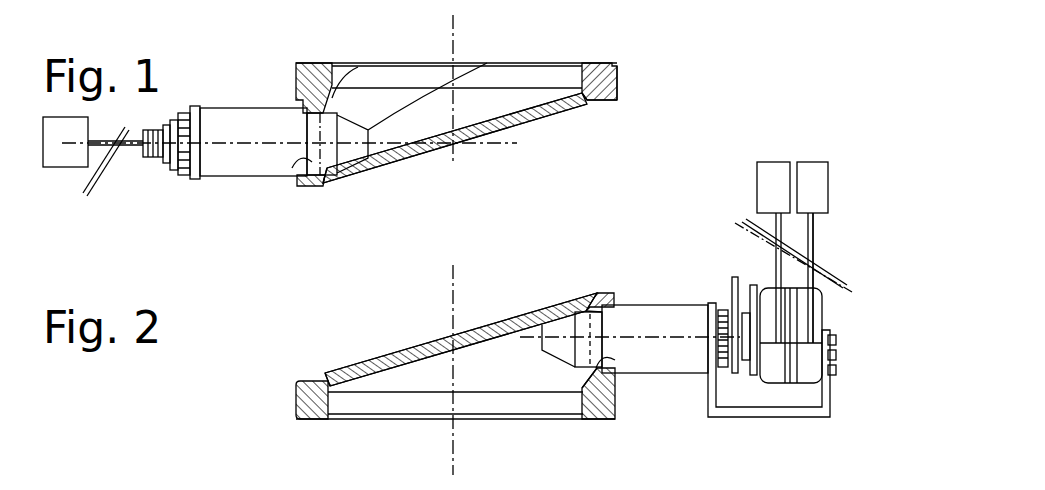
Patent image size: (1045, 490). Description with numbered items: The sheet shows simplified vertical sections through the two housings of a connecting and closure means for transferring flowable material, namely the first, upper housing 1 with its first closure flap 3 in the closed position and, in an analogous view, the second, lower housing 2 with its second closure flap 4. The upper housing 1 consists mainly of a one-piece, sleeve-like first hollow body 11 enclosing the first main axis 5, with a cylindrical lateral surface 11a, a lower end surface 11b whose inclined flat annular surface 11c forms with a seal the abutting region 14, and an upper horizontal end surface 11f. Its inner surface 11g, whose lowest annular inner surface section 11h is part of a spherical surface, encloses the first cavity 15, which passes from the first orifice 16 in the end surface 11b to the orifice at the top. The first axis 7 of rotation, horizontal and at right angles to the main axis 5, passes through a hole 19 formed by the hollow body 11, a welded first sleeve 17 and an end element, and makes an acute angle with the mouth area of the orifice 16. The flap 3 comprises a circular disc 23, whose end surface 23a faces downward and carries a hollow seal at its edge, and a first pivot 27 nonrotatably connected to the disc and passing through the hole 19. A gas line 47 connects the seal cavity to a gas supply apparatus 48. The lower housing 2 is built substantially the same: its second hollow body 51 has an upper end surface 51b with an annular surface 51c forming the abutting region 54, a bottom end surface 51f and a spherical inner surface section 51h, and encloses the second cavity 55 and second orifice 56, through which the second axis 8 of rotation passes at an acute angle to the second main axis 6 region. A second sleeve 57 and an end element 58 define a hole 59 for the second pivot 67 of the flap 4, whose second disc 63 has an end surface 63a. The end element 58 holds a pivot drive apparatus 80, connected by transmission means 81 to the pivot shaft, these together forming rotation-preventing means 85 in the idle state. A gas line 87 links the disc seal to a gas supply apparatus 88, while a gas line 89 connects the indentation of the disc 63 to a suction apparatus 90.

In FIG. 1, the first upper housing 1 is at (293, 62).
In FIG. 2, the second lower housing 2 is at (295, 400).
In FIG. 1, the first closure flap 3 is at (398, 160).
In FIG. 2, the second closure flap 4 is at (365, 368).
In FIG. 1, the first main axis 5 is at (456, 52).
In FIG. 2, the second main axis 6 is at (452, 290).
In FIG. 1, the first axis of rotation 7 is at (238, 146).
In FIG. 2, the second axis of rotation 8 is at (685, 340).
In FIG. 1, the first hollow body 11 is at (605, 63).
In FIG. 1, the lateral surface 11a is at (617, 80).
In FIG. 1, the end surface 11b is at (607, 100).
In FIG. 1, the annular surface 11c is at (600, 102).
In FIG. 1, the end surface 11f is at (590, 63).
In FIG. 1, the inner surface 11g is at (338, 63).
In FIG. 1, the inner surface section 11h is at (340, 64).
In FIG. 1, the abutting region 14 is at (320, 182).
In FIG. 1, the first cavity 15 is at (392, 97).
In FIG. 1, the first orifice 16 is at (328, 185).
In FIG. 1, the first sleeve 17 is at (270, 109).
In FIG. 1, the hole 19 is at (297, 163).
In FIG. 1, the disc 23 is at (437, 157).
In FIG. 1, the end surface 23a is at (548, 116).
In FIG. 1, the first pivot 27 is at (487, 63).
In FIG. 1, the gas line 47 is at (128, 148).
In FIG. 1, the gas supply apparatus 48 is at (68, 167).
In FIG. 2, the second hollow body 51 is at (315, 420).
In FIG. 2, the upper end surface 51b is at (612, 292).
In FIG. 2, the annular surface 51c is at (590, 303).
In FIG. 2, the end surface 51f is at (596, 422).
In FIG. 2, the inner surface section 51h is at (582, 385).
In FIG. 2, the abutting region 54 is at (313, 379).
In FIG. 2, the second cavity 55 is at (420, 384).
In FIG. 2, the second orifice 56 is at (330, 373).
In FIG. 2, the second sleeve 57 is at (650, 305).
In FIG. 2, the end element 58 is at (706, 418).
In FIG. 2, the hole 59 is at (603, 356).
In FIG. 2, the second disc 63 is at (480, 330).
In FIG. 2, the end surface 63a is at (518, 320).
In FIG. 2, the second pivot 67 is at (548, 357).
In FIG. 2, the pivot drive apparatus 80 is at (823, 313).
In FIG. 2, the transmission means 81 is at (735, 277).
In FIG. 2, the rotation-preventing means 85 is at (829, 322).
In FIG. 2, the gas line 87 is at (772, 217).
In FIG. 2, the gas supply apparatus 88 is at (776, 162).
In FIG. 2, the gas line 89 is at (813, 242).
In FIG. 2, the suction apparatus 90 is at (815, 162).